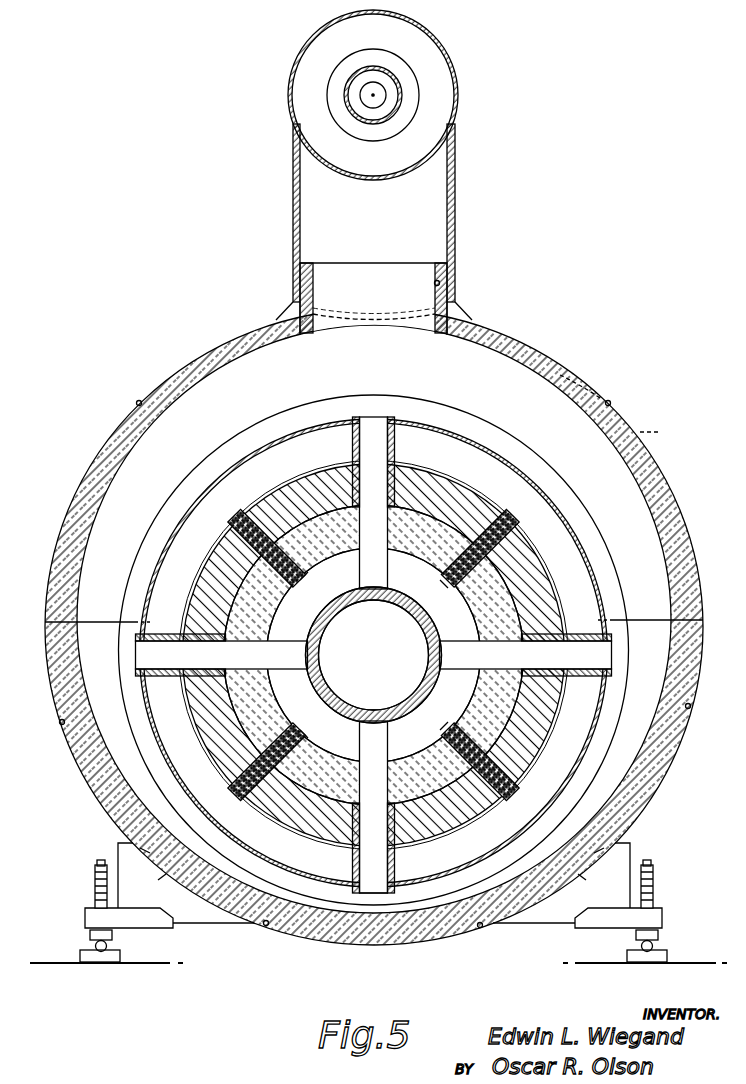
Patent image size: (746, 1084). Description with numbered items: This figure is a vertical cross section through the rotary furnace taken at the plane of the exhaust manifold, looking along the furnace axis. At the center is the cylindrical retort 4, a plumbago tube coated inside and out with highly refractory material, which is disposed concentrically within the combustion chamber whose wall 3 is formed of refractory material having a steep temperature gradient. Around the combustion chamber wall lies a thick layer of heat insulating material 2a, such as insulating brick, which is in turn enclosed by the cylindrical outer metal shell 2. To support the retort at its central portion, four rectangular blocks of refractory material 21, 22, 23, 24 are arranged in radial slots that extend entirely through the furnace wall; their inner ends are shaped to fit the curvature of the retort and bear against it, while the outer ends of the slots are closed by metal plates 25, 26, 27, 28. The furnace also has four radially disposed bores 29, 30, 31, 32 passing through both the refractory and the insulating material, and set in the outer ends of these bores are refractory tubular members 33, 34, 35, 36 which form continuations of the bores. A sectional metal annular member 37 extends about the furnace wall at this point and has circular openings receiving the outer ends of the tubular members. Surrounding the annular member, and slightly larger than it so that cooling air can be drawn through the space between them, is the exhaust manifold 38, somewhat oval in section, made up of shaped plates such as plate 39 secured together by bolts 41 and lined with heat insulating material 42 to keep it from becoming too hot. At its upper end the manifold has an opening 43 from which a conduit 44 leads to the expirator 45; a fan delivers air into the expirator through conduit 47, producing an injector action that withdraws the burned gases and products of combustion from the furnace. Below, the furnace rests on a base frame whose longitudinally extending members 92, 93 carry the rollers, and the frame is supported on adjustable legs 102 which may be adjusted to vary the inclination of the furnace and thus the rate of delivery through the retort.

The outer metal shell 2 is at (545, 559).
The layer of heat insulating material 2a is at (530, 743).
The wall of the combustion chamber 3 is at (410, 556).
The cylindrical retort 4 is at (391, 605).
The supporting block of refractory material 21 is at (315, 705).
The supporting block of refractory material 22 is at (353, 560).
The supporting block of refractory material 23 is at (442, 610).
The supporting block of refractory material 24 is at (433, 678).
The metal plate 25 is at (243, 802).
The metal plate 26 is at (244, 507).
The metal plate 27 is at (493, 510).
The metal plate 28 is at (525, 778).
The radially disposed bore 29 is at (255, 652).
The radially disposed bore 30 is at (374, 549).
The radially disposed bore 31 is at (490, 658).
The radially disposed bore 32 is at (371, 766).
The tubular member 33 is at (166, 633).
The tubular member 34 is at (386, 452).
The tubular member 35 is at (580, 632).
The tubular member 36 is at (396, 862).
The annular member 37 is at (268, 447).
The exhaust manifold 38 is at (193, 349).
The plate 39 is at (660, 432).
The bolts 41 is at (137, 403).
The heat insulating material 42 is at (562, 368).
The opening 43 is at (440, 284).
The conduit 44 is at (456, 203).
The expirator 45 is at (460, 88).
The conduit 47 is at (383, 118).
The longitudinally extending frame member 92 is at (160, 866).
The longitudinally extending frame member 93 is at (584, 877).
The adjustable leg 102 is at (93, 897).